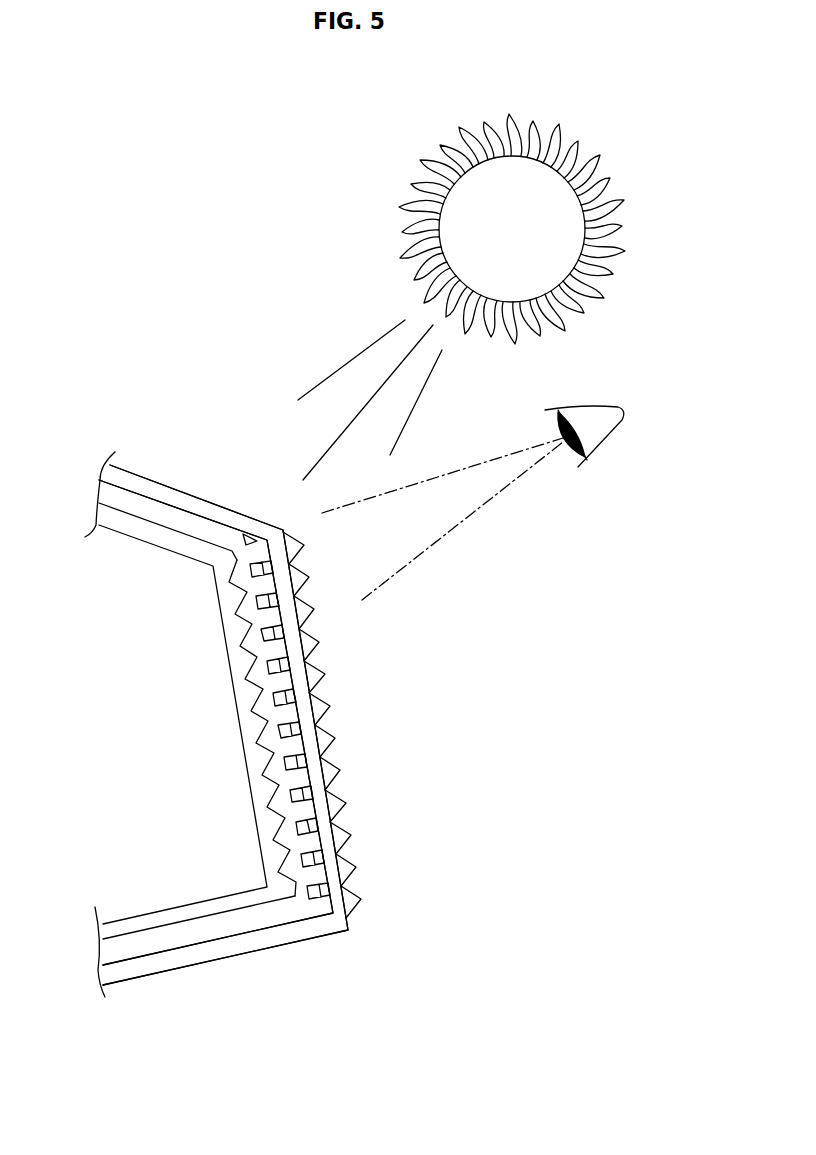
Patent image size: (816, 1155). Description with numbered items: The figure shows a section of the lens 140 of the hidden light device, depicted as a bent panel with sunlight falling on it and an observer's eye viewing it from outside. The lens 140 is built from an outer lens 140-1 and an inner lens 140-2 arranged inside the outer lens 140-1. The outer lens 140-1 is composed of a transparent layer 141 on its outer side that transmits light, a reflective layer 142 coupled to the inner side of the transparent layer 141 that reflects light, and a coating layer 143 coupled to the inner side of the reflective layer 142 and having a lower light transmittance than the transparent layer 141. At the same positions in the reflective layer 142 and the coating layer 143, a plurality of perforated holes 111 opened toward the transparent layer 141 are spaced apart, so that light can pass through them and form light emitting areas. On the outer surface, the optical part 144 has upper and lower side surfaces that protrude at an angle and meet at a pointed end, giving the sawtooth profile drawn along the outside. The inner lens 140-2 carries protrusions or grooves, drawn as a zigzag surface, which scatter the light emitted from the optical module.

The lens 140 is at (279, 697).
The outer lens 140-1 is at (169, 493).
The inner lens 140-2 is at (143, 538).
The perforated hole 111 is at (283, 717).
The transparent layer 141 is at (310, 754).
The reflective layer 142 is at (350, 883).
The coating layer 143 is at (275, 795).
The optical part 144 is at (327, 708).